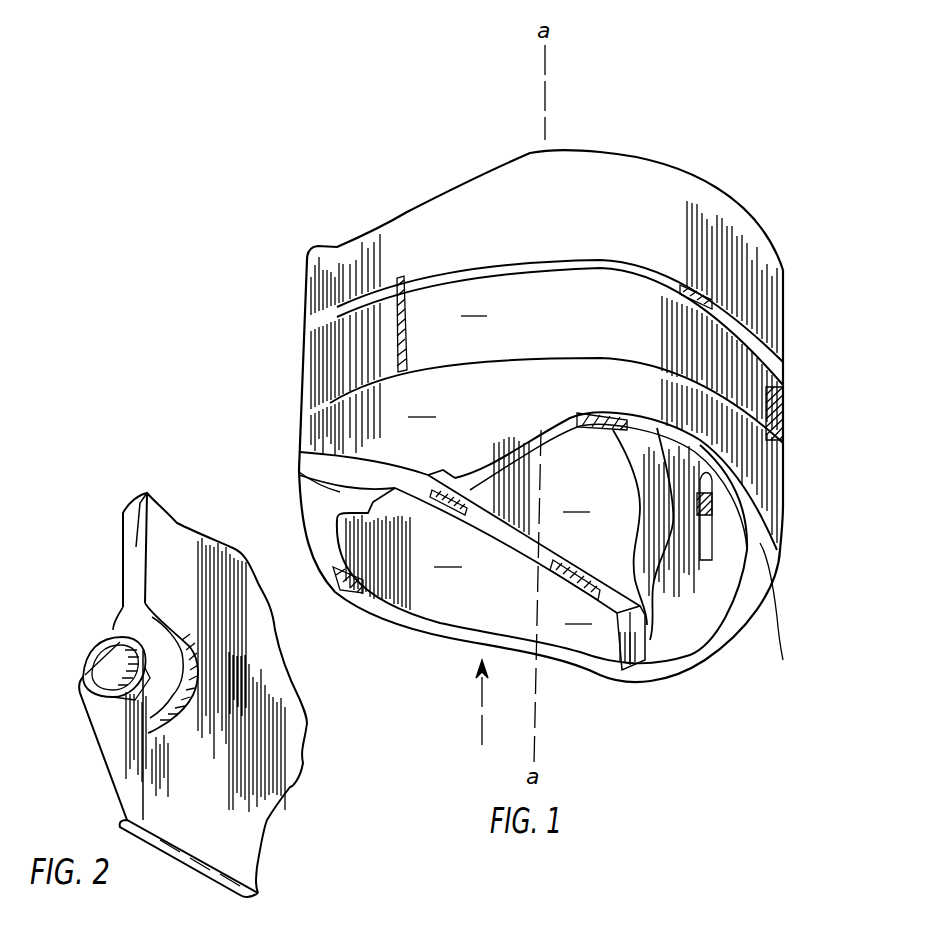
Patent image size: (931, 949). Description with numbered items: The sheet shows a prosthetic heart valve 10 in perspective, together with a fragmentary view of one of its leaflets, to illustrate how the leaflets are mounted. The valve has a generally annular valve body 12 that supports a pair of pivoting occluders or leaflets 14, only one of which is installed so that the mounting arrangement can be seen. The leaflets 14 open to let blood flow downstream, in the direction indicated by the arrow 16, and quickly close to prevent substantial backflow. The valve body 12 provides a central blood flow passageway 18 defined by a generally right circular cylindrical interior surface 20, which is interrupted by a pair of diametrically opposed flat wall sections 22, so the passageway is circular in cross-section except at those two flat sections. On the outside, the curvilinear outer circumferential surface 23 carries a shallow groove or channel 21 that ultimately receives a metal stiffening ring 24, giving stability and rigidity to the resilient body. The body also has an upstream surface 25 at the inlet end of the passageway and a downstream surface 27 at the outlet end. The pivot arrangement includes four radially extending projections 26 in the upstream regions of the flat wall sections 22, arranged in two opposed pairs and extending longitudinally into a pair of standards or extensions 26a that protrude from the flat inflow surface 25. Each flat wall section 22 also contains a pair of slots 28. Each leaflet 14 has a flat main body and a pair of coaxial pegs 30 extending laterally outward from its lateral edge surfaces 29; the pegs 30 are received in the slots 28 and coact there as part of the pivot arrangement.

In FIG. 1, the prosthetic heart valve 10 is at (383, 630).
In FIG. 1, the valve body 12 is at (770, 299).
In FIG. 1, the leaflets 14 is at (603, 534).
In FIG. 2, the leaflets 14 is at (118, 541).
In FIG. 1, the arrow 16 is at (482, 715).
In FIG. 1, the central blood flow passageway 18 is at (440, 600).
In FIG. 1, the cylindrical interior surface 20 is at (404, 562).
In FIG. 1, the groove or channel 21 is at (556, 359).
In FIG. 1, the flat wall sections 22 is at (660, 643).
In FIG. 1, the outer circumferential surface 23 is at (377, 441).
In FIG. 1, the metal stiffening ring 24 is at (787, 407).
In FIG. 1, the upstream surface 25 is at (786, 611).
In FIG. 1, the radially extending projections 26 is at (700, 585).
In FIG. 1, the standards or extensions 26a is at (343, 497).
In FIG. 1, the downstream surface 27 is at (405, 212).
In FIG. 1, the slots 28 is at (697, 500).
In FIG. 2, the lateral edge surfaces 29 is at (147, 492).
In FIG. 2, the pegs 30 is at (107, 640).